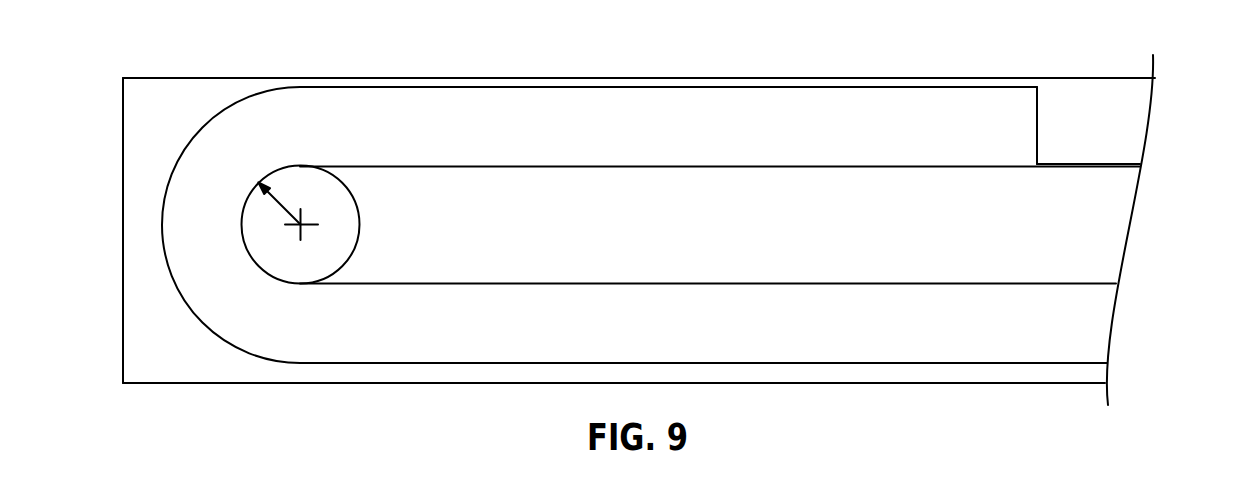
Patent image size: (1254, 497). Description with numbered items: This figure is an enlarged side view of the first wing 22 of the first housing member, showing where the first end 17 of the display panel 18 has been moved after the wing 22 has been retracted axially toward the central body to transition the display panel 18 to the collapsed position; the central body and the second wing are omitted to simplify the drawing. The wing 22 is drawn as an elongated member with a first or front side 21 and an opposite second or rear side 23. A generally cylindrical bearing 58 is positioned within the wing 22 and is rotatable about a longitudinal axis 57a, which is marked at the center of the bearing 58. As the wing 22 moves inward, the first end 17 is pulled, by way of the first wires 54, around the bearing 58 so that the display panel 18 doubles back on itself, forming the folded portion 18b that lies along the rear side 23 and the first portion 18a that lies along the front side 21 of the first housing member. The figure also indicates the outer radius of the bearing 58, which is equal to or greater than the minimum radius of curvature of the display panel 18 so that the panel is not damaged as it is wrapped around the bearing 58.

The first end 17 is at (1037, 121).
The display panel 18 is at (1093, 322).
The first portion 18a is at (1056, 365).
The folded portion 18b is at (481, 87).
The front side 21 is at (953, 383).
The first wing 22 is at (609, 78).
The rear side 23 is at (940, 78).
The first wires 54 is at (1056, 167).
The longitudinal axis 57a is at (306, 222).
The bearing 58 is at (352, 253).